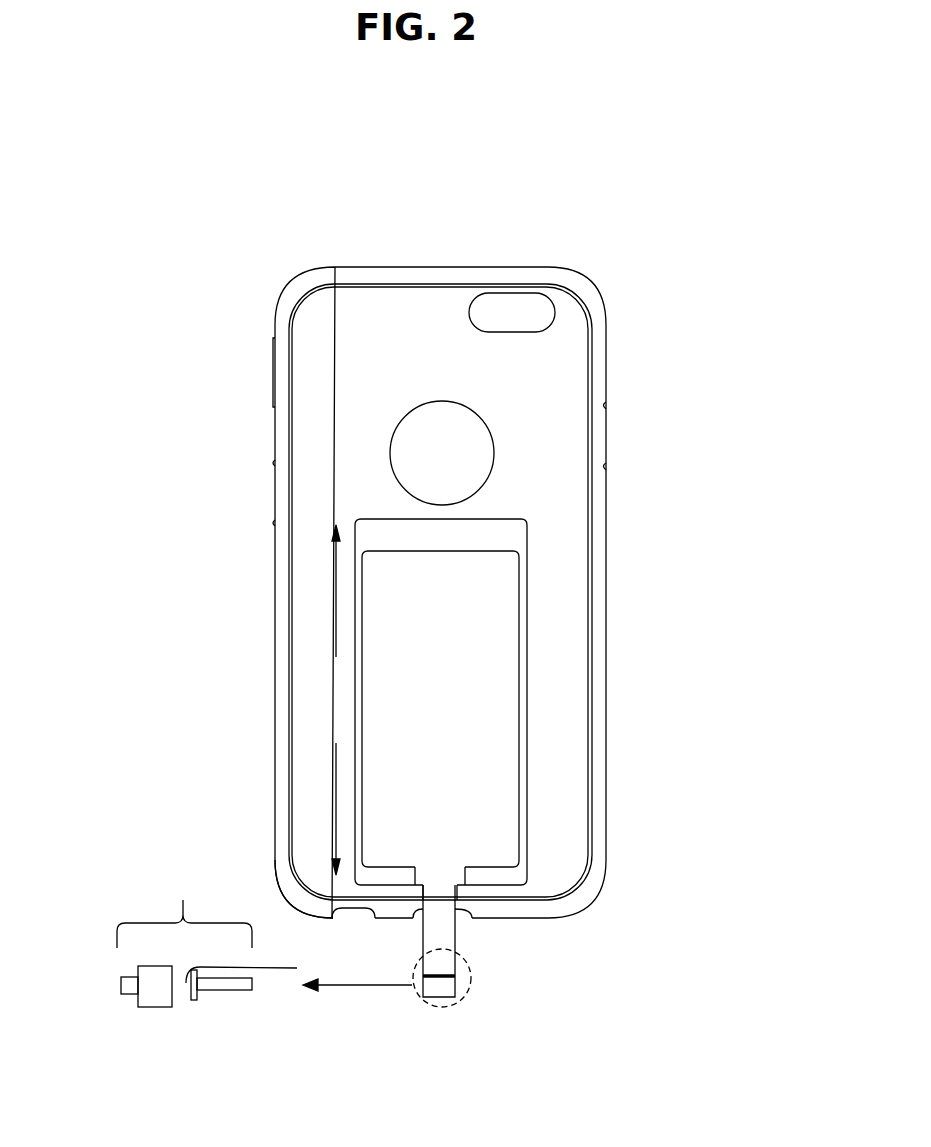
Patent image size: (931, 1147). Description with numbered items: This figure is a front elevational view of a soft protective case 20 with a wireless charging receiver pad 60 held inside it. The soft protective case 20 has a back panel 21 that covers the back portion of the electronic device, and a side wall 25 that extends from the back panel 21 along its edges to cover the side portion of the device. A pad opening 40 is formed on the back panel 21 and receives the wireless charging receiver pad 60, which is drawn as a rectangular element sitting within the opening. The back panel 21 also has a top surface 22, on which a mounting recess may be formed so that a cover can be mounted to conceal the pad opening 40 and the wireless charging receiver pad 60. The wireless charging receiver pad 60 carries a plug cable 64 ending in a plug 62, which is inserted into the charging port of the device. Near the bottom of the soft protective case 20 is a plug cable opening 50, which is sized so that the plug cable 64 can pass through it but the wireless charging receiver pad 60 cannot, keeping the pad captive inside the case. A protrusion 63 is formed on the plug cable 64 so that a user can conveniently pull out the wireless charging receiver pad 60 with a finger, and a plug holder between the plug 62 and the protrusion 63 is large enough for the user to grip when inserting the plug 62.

The soft protective case 20 is at (310, 262).
The back panel 21 is at (550, 375).
The top surface 22 is at (507, 500).
The side wall 25 is at (600, 446).
The pad opening 40 is at (380, 535).
The wireless charging receiver pad 60 is at (473, 643).
The plug cable opening 50 is at (463, 888).
The plug cable 64 is at (437, 932).
The protrusion 63 is at (457, 977).
The plug 62 is at (428, 997).